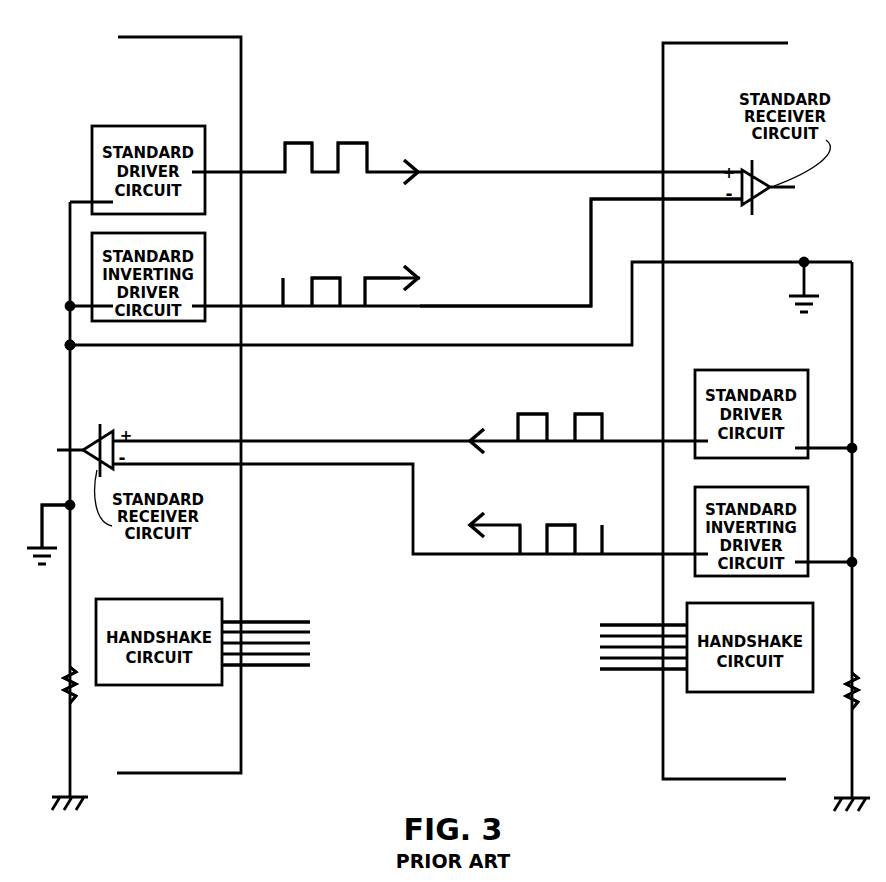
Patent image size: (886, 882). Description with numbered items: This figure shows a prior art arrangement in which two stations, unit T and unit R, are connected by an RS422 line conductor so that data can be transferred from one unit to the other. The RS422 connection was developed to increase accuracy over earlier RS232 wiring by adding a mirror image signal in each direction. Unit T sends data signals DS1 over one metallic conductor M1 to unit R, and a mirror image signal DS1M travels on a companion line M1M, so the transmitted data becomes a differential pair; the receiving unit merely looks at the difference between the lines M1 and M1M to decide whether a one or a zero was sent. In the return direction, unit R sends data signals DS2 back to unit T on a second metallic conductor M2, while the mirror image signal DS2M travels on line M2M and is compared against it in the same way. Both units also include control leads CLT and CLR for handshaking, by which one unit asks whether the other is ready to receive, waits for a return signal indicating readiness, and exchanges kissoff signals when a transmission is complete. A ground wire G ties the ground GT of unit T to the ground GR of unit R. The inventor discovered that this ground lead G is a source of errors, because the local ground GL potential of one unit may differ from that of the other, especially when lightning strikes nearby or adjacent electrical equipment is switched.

The unit T is at (226, 50).
The unit R is at (678, 50).
The RS422 connection RS422 is at (508, 138).
The data signals DS1 is at (351, 139).
The mirror image signal DS1M is at (340, 274).
The metallic conductor M1 is at (545, 172).
The line M1M is at (606, 201).
The ground wire G is at (450, 348).
The ground GT is at (72, 347).
The ground GR is at (801, 265).
The metallic conductor M2 is at (364, 440).
The line M2M is at (333, 466).
The data signals DS2 is at (579, 411).
The mirror image signal DS2M is at (562, 521).
The local ground GL is at (72, 545).
The control leads CLT is at (287, 692).
The control leads CLR is at (565, 694).